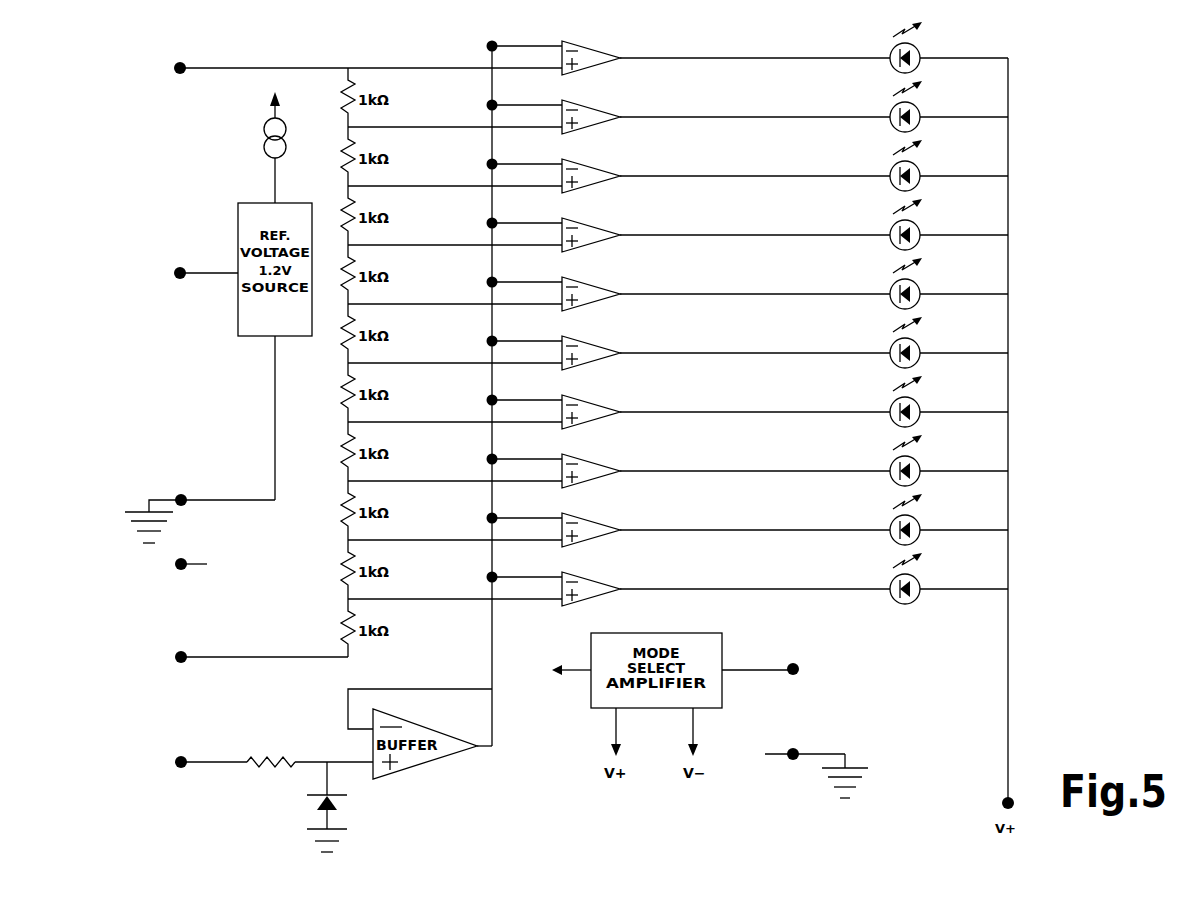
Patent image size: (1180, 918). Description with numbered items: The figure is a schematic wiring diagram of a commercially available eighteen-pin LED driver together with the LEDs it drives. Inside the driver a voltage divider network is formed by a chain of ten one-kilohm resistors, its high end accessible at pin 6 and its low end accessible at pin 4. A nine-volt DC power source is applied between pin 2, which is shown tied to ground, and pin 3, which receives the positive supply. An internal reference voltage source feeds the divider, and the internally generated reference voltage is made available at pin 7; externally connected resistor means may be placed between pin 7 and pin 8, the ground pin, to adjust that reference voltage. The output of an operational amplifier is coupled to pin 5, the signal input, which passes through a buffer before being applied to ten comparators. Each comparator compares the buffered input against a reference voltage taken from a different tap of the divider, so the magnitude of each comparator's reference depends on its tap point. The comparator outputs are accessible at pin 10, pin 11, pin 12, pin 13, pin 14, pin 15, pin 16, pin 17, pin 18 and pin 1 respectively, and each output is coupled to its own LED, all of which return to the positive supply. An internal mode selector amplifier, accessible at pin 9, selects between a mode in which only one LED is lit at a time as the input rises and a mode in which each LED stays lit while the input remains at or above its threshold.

The pin 1 is at (487, 591).
The pin 2 is at (816, 773).
The pin 3 is at (176, 557).
The pin 4 is at (240, 665).
The pin 5 is at (243, 765).
The pin 6 is at (242, 79).
The pin 7 is at (187, 284).
The pin 8 is at (200, 509).
The pin 9 is at (773, 668).
The pin 10 is at (492, 60).
The pin 11 is at (491, 119).
The pin 12 is at (491, 178).
The pin 13 is at (491, 237).
The pin 14 is at (492, 296).
The pin 15 is at (491, 355).
The pin 16 is at (491, 414).
The pin 17 is at (491, 473).
The pin 18 is at (491, 532).